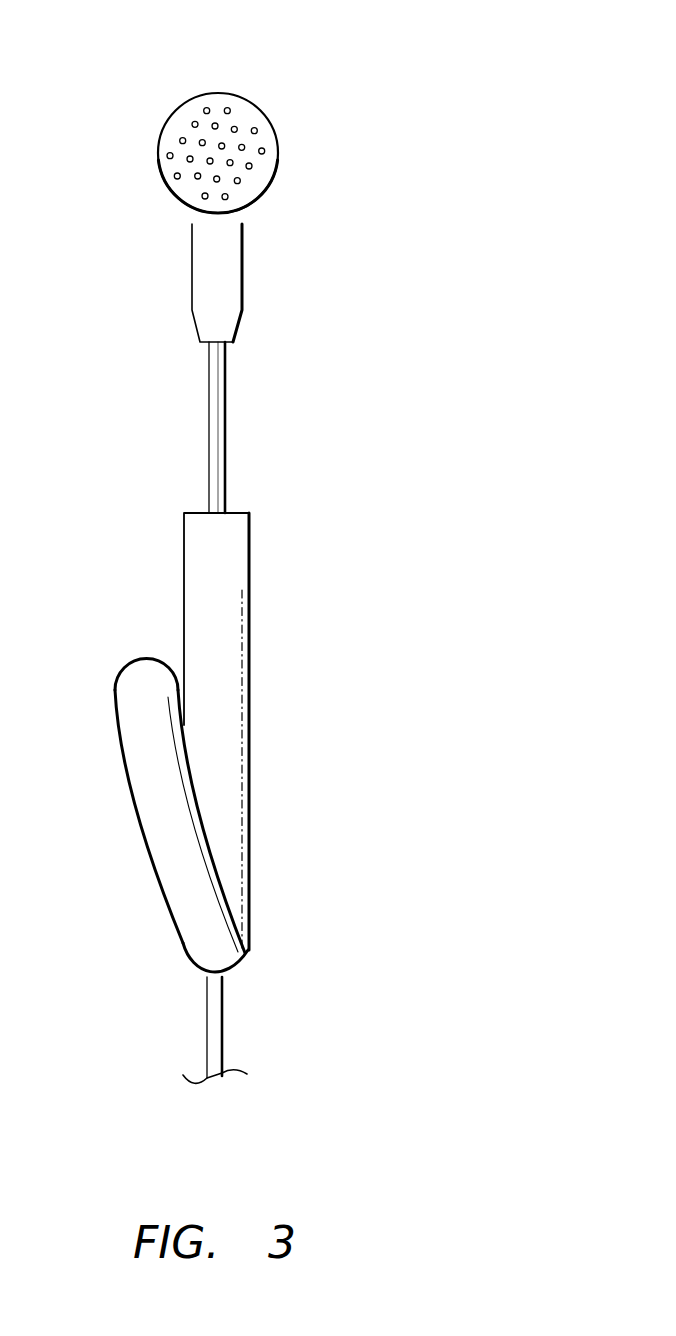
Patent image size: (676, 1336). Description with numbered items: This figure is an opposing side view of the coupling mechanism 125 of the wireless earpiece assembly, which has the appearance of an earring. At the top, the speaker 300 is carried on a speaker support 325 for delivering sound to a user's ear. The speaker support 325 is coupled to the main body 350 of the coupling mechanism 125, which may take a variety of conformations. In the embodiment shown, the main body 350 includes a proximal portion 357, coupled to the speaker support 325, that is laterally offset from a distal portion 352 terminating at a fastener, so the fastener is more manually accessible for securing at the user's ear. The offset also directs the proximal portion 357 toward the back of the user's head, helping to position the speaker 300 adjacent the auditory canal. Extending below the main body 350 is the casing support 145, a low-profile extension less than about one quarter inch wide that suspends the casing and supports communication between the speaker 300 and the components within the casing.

The coupling mechanism 125 is at (438, 502).
The speaker 300 is at (218, 103).
The speaker support 325 is at (215, 408).
The main body 350 is at (238, 576).
The proximal portion 357 is at (230, 782).
The distal portion 352 is at (147, 773).
The casing support 145 is at (223, 1027).